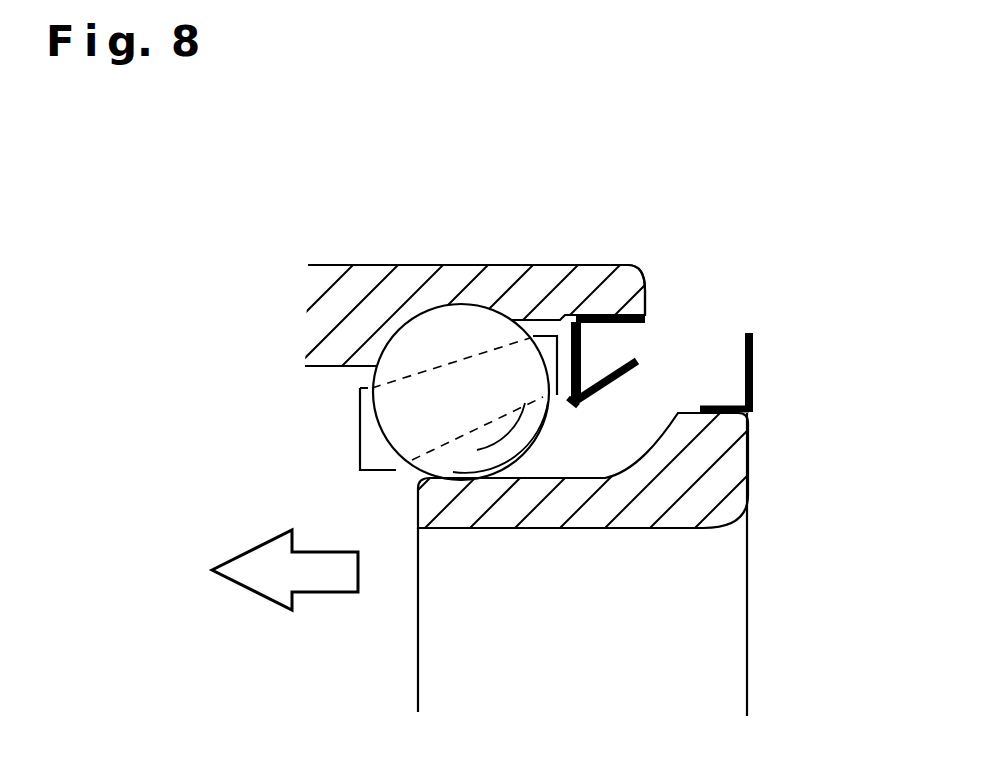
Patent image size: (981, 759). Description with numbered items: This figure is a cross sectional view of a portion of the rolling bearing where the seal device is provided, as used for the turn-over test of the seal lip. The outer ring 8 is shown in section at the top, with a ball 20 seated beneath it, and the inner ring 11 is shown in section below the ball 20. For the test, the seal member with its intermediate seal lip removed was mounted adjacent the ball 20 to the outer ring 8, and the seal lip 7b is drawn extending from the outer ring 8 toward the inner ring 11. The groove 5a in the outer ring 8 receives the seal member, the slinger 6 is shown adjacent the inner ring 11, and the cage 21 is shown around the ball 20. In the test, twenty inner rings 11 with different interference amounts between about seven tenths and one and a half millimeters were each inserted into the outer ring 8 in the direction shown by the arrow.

The outer ring 8 is at (515, 265).
The seal groove of outer ring 5a is at (632, 285).
The seal 7b is at (635, 360).
The slinger 6 is at (753, 358).
The cage 21 is at (368, 435).
The ball 20 is at (433, 498).
The inner ring 11 is at (705, 502).